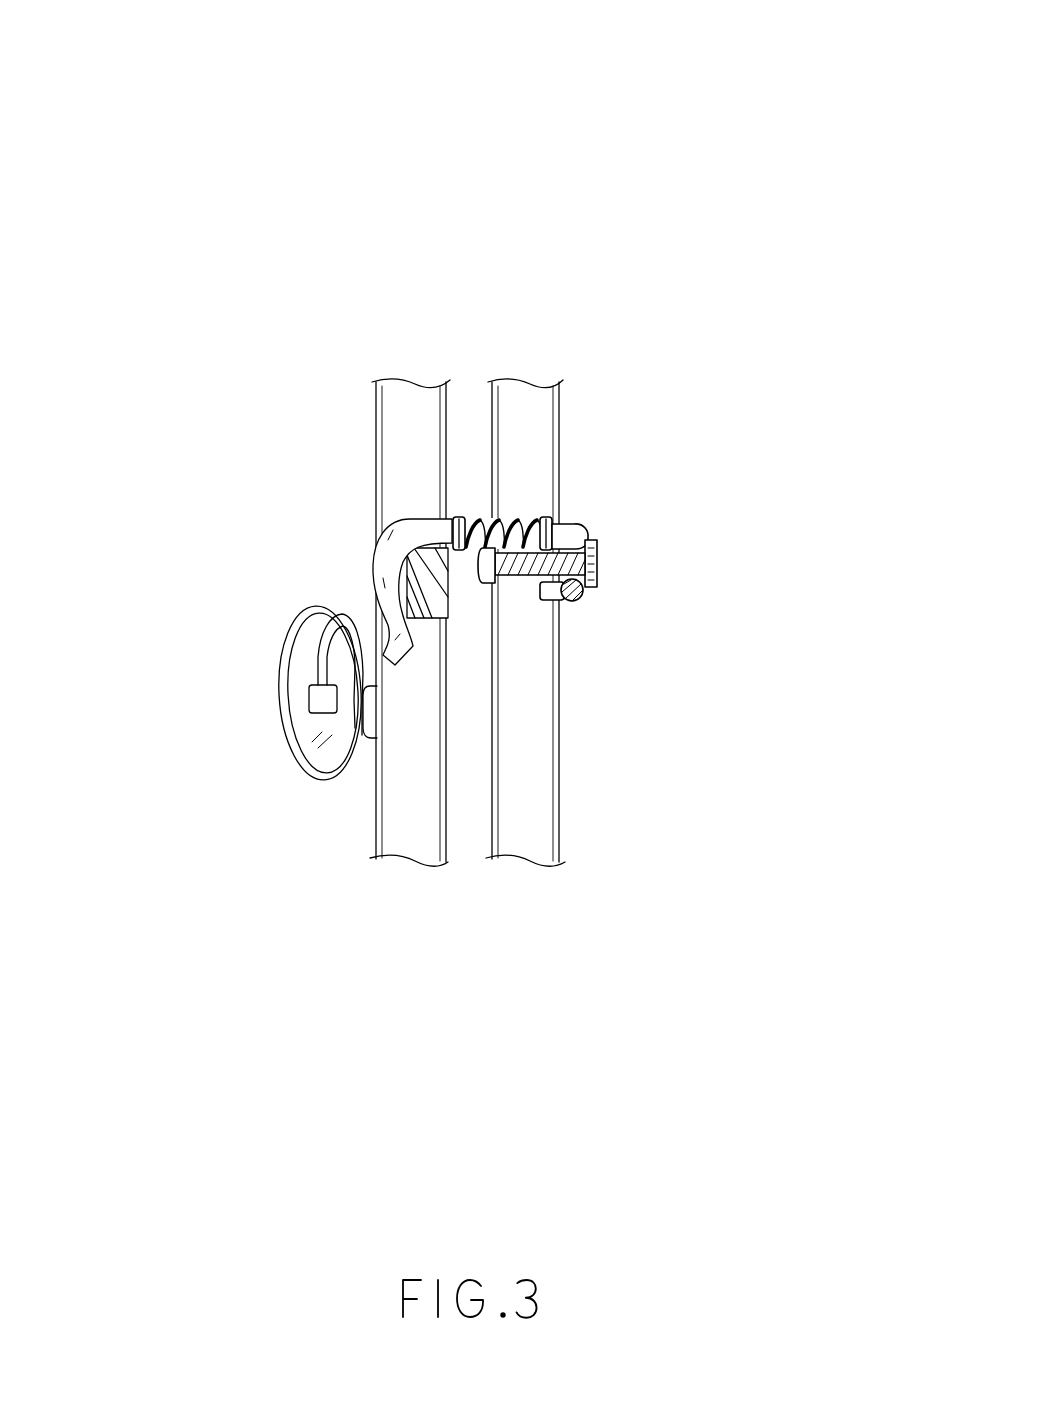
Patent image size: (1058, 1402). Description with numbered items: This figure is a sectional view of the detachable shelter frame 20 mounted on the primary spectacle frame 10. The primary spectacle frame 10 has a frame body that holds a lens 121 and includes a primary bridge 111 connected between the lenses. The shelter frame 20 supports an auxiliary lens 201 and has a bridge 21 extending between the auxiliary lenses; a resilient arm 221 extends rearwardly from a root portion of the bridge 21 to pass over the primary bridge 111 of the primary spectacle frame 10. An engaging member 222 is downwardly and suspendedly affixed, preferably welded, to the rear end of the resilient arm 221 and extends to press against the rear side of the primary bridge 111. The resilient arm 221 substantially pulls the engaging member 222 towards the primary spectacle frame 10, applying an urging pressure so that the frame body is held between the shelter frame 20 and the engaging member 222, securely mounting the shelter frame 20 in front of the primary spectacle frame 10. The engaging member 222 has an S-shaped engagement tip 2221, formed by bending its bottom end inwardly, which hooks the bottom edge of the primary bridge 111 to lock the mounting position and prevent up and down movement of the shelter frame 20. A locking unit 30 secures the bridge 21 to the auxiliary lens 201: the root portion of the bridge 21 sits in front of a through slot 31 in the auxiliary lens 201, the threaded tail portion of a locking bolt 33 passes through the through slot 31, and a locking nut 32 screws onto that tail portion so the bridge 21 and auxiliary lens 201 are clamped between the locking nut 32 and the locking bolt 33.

The primary spectacle frame 10 is at (264, 606).
The detachable shelter frame 20 is at (677, 455).
The bridge 21 is at (635, 478).
The locking unit 30 is at (684, 652).
The through slot 31 is at (576, 610).
The locking nut 32 is at (668, 556).
The locking bolt 33 is at (562, 674).
The primary bridge 111 is at (313, 574).
The lens 121 is at (351, 694).
The auxiliary lens 201 is at (654, 641).
The resilient arm 221 is at (531, 302).
The engaging member 222 is at (348, 433).
The S-shaped engagement tip 2221 is at (251, 704).